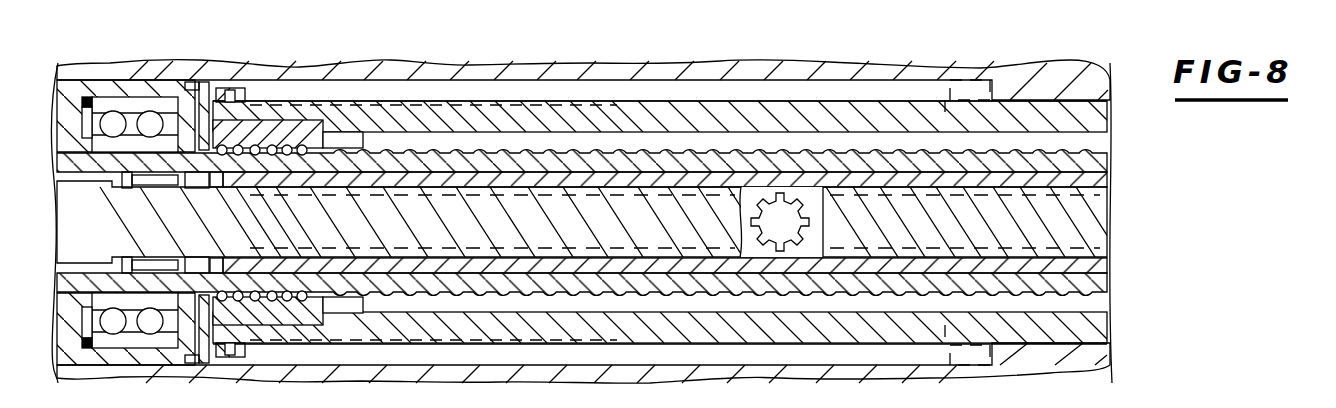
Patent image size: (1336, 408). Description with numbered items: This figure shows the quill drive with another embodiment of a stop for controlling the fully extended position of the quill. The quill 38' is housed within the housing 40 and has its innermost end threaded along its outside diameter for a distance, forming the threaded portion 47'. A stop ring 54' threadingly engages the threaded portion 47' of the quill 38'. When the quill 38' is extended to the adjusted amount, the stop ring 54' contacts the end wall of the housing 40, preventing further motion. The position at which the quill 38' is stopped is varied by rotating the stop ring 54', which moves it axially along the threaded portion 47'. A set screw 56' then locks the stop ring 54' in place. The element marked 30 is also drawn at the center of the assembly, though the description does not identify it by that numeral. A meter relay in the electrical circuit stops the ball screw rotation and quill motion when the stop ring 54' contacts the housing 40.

The housing 40 is at (1052, 68).
The quill 38' is at (666, 194).
The threaded portion 47' is at (660, 184).
The shaft 30 is at (794, 235).
The stop ring 54' is at (279, 201).
The set screw 56' is at (239, 182).